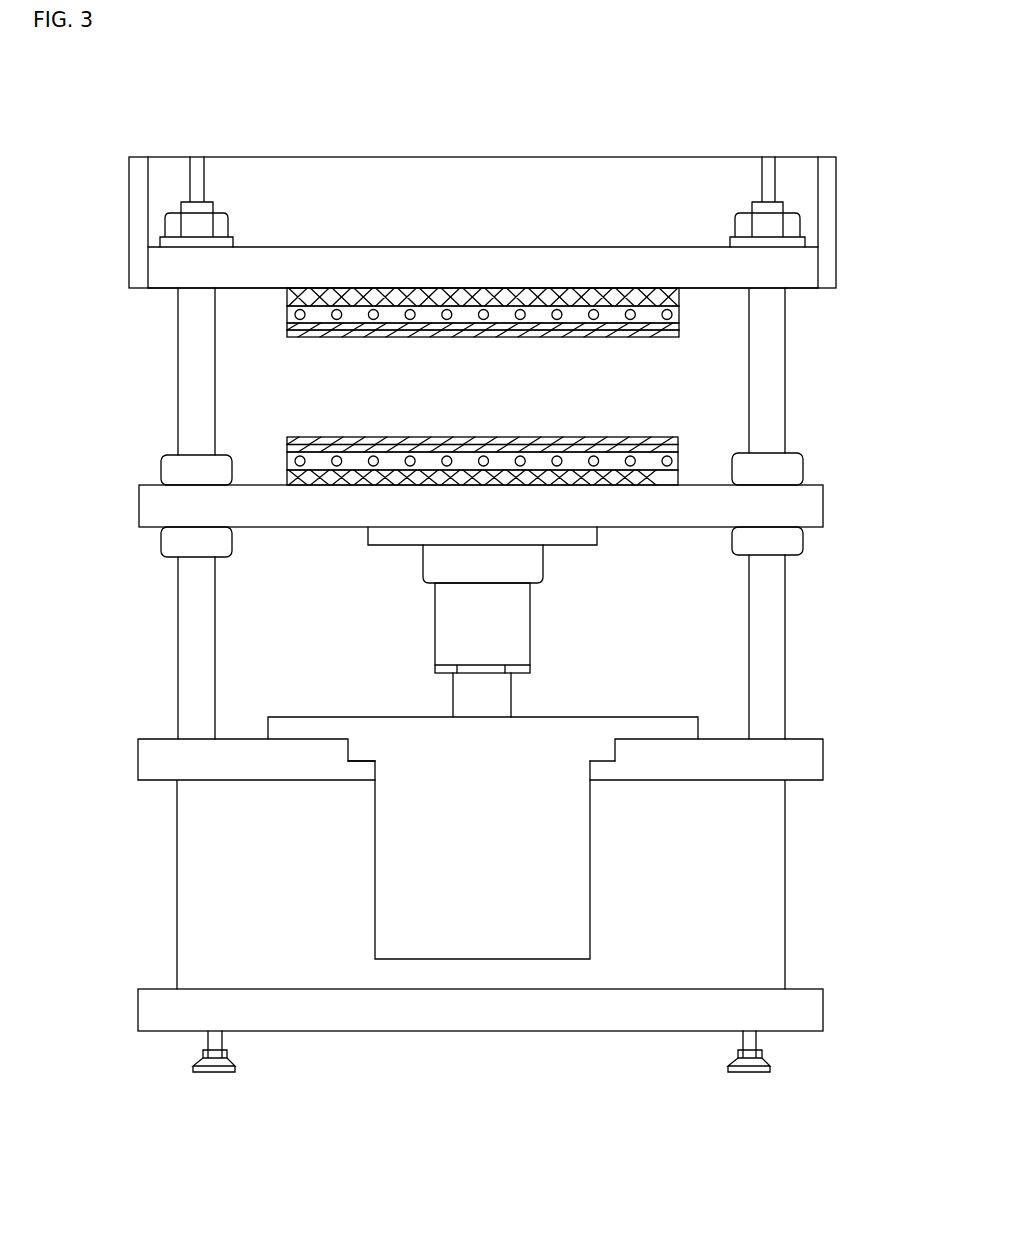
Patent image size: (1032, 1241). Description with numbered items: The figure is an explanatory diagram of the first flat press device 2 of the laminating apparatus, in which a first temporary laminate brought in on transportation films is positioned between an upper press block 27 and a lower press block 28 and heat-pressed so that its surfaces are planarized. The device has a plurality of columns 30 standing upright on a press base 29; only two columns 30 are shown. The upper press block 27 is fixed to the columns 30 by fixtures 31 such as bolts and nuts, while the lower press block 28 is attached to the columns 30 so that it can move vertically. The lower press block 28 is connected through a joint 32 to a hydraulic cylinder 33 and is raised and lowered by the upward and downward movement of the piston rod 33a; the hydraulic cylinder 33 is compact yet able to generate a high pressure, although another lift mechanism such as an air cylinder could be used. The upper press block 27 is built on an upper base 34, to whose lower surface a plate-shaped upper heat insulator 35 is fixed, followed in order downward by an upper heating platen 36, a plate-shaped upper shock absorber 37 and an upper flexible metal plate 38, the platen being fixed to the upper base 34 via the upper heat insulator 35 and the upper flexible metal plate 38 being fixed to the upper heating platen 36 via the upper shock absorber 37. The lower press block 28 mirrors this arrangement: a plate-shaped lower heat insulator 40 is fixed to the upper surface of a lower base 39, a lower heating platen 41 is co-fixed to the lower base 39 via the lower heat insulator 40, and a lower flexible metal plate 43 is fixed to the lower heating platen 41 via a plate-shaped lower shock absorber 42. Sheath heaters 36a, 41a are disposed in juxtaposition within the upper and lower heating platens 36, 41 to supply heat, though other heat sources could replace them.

The first flat press device 2 is at (815, 416).
The upper press block 27 is at (805, 268).
The lower press block 28 is at (456, 541).
The press base 29 is at (200, 882).
The columns 30 is at (193, 690).
The fixtures 31 is at (240, 211).
The joint 32 is at (445, 640).
The hydraulic cylinder 33 is at (567, 865).
The piston rod 33a is at (503, 699).
The upper base 34 is at (556, 260).
The upper heat insulator 35 is at (632, 295).
The upper heating platen 36 is at (483, 206).
The sheath heaters 36a is at (483, 309).
The upper shock absorber 37 is at (320, 325).
The upper flexible metal plate 38 is at (607, 340).
The lower base 39 is at (698, 512).
The lower heat insulator 40 is at (653, 478).
The lower heating platen 41 is at (476, 528).
The sheath heaters 41a is at (593, 466).
The lower shock absorber 42 is at (352, 445).
The lower flexible metal plate 43 is at (420, 440).